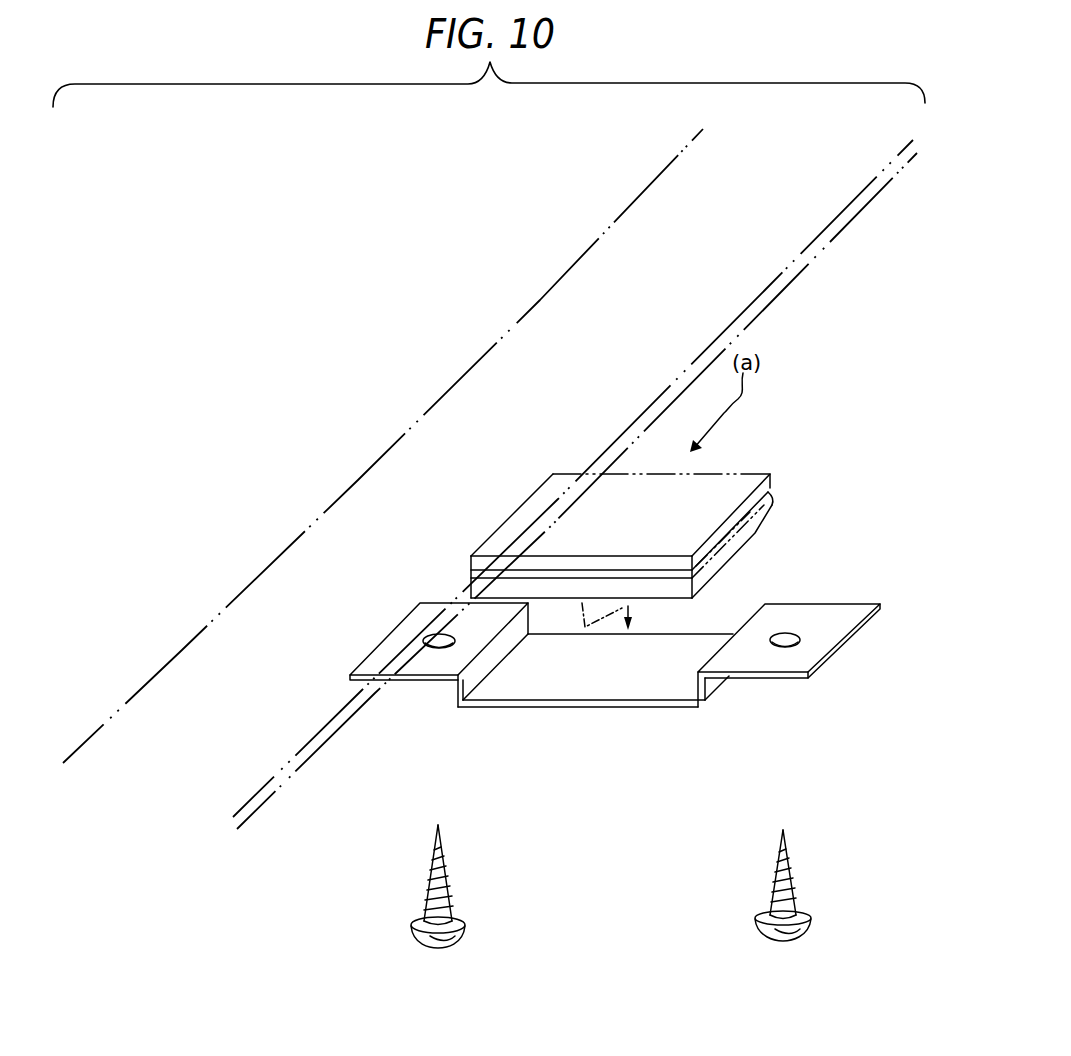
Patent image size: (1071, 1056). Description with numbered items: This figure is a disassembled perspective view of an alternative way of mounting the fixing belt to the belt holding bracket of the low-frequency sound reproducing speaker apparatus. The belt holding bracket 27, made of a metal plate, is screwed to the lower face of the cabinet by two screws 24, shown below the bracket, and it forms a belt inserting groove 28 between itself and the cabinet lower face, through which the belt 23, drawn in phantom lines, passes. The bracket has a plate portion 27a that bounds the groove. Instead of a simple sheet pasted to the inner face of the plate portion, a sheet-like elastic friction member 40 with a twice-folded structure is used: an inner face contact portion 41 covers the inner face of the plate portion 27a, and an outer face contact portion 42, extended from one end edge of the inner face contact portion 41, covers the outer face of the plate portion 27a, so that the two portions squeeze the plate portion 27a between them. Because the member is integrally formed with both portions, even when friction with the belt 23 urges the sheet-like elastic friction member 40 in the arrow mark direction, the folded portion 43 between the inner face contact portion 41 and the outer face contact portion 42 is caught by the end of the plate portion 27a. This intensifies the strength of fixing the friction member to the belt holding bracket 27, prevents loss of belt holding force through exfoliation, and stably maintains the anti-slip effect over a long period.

The belt 23 is at (838, 233).
The screws 24 is at (448, 882).
The belt holding bracket 27 is at (615, 677).
The plate portion 27a is at (542, 709).
The belt inserting groove 28 is at (729, 614).
The sheet-like elastic friction member 40 is at (646, 508).
The inner face contact portion 41 is at (510, 518).
The outer face contact portion 42 is at (752, 532).
The folded portion 43 is at (773, 490).